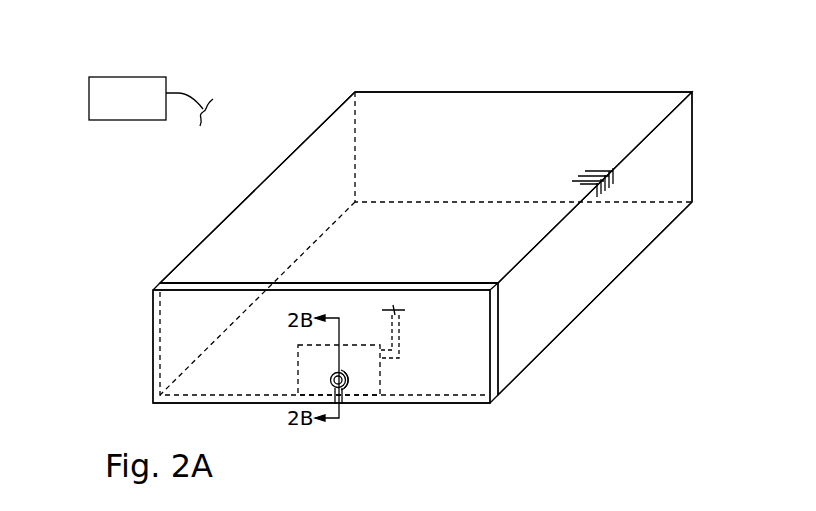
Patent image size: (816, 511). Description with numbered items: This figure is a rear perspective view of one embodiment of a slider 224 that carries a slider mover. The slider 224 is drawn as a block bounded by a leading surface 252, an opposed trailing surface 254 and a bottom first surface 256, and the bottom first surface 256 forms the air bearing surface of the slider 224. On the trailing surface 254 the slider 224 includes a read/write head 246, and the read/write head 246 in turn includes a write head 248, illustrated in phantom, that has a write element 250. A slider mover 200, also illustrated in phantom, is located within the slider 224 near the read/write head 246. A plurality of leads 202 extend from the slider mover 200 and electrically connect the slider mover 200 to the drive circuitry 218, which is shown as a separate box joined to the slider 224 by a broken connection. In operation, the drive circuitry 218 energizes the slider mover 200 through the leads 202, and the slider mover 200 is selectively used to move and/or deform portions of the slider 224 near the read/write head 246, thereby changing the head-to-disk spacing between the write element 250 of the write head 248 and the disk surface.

The drive circuitry 218 is at (113, 88).
The leading surface 252 is at (544, 138).
The slider 224 is at (641, 278).
The trailing surface 254 is at (190, 331).
The bottom first surface 256 is at (540, 308).
The slider mover 200 is at (368, 372).
The leads 202 is at (404, 329).
The write element 250 is at (330, 378).
The write head 248 is at (356, 384).
The read/write head 246 is at (348, 408).